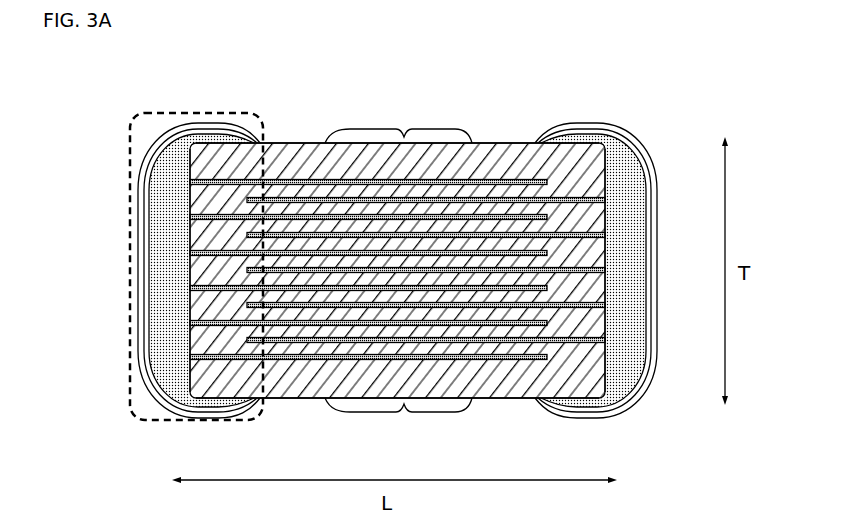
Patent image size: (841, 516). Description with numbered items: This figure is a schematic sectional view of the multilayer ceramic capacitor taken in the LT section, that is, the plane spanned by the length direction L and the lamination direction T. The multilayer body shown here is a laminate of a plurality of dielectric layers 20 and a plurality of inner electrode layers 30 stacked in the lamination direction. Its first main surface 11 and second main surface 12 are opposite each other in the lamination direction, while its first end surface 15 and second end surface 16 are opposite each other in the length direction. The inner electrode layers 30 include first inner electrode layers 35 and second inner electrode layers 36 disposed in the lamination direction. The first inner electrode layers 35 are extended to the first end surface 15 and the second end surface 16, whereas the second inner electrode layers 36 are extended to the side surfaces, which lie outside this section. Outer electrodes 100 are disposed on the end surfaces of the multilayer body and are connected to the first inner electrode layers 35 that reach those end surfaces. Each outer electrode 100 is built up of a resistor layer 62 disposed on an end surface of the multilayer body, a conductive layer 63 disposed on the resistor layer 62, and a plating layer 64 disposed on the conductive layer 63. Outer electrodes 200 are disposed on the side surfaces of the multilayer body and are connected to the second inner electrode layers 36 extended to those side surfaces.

The outer electrode 100 is at (393, 265).
The first main surface 11 is at (284, 143).
The second main surface 12 is at (300, 398).
The first end surface 15 is at (188, 338).
The second end surface 16 is at (606, 345).
The dielectric layer 20 is at (393, 273).
The outer electrode 200 is at (404, 137).
The inner electrode layer 30 is at (391, 317).
The first inner electrode layer 35 is at (243, 358).
The second inner electrode layer 36 is at (473, 303).
The resistor layer 62 is at (162, 282).
The conductive layer 63 is at (144, 248).
The plating layer 64 is at (141, 204).